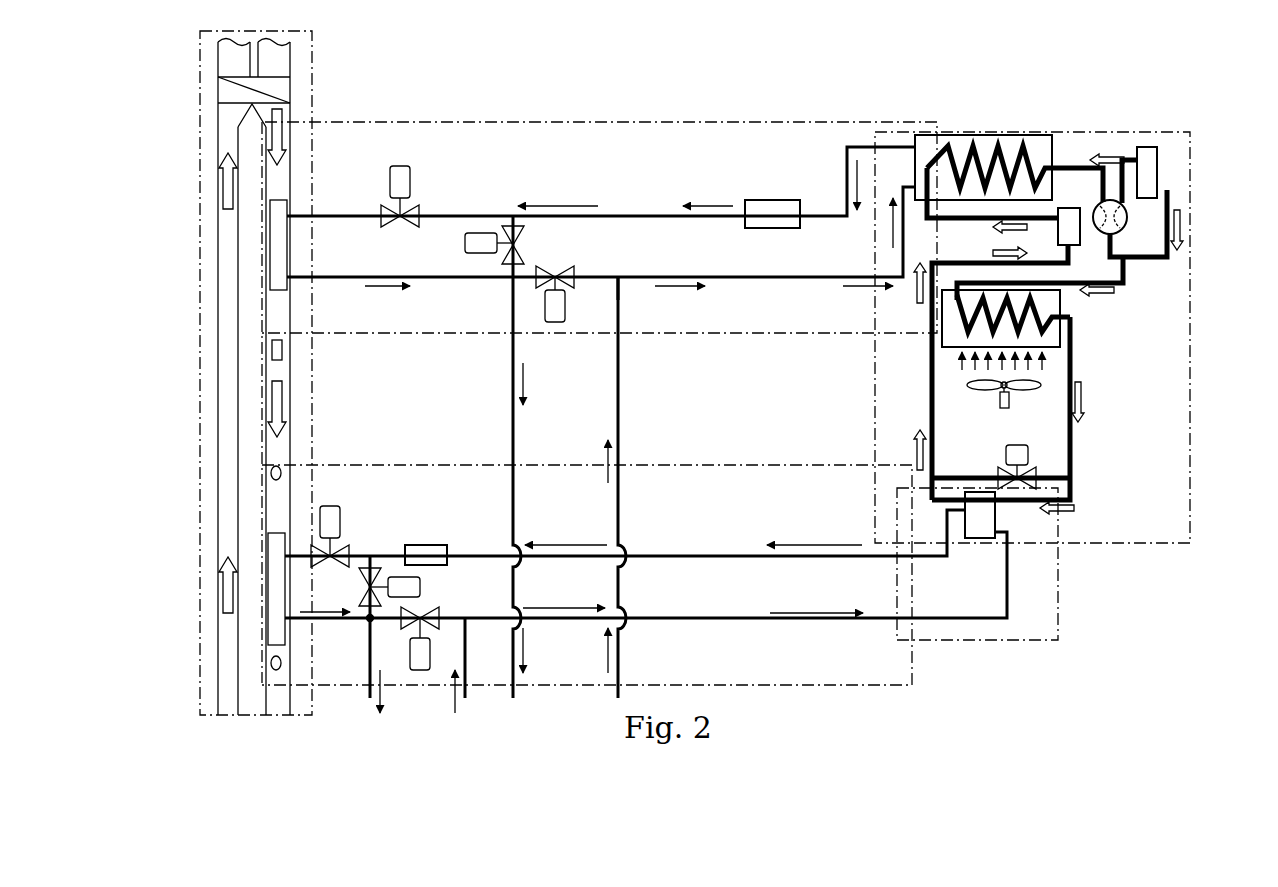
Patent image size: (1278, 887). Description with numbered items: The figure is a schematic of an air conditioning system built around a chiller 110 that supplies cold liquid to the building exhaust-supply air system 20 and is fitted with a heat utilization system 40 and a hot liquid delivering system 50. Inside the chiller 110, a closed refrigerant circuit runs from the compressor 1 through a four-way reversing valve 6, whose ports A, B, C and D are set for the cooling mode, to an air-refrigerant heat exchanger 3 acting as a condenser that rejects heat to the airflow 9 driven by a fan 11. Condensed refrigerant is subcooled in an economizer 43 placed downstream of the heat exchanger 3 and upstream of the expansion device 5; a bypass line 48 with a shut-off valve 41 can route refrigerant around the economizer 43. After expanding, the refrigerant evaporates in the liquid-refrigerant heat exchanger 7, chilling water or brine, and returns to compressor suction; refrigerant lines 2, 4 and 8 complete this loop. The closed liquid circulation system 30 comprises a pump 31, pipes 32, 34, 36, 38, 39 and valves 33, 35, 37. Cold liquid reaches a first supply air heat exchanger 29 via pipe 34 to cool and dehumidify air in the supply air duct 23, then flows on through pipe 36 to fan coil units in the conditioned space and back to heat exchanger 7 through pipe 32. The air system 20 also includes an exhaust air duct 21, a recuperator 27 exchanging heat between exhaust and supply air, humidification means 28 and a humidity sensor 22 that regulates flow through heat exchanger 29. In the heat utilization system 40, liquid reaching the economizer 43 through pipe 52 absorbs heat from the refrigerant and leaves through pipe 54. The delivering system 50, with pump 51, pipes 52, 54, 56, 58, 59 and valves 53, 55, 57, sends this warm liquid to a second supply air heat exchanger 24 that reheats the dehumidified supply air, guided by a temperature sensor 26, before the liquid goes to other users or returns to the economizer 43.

The compressor 1 is at (1150, 172).
The refrigerant pipe 2 is at (1148, 262).
The air-refrigerant heat exchanger 3 is at (1043, 295).
The refrigerant pipe 4 is at (1073, 358).
The expansion device 5 is at (1067, 235).
The 4-way reversing valve 6 is at (1123, 218).
The liquid-refrigerant heat exchanger 7 is at (967, 197).
The refrigerant pipe 8 is at (952, 262).
The airflow 9 is at (1023, 352).
The fan 11 is at (982, 388).
The building exhaust-supply air system 20 is at (198, 138).
The exhaust air duct 21 is at (230, 383).
The humidity sensor 22 is at (270, 557).
The supply air duct 23 is at (273, 183).
The second supply air heat exchanger 24 is at (270, 473).
The temperature sensor 26 is at (270, 662).
The recuperator 27 is at (278, 92).
The humidification means 28 is at (272, 350).
The first supply air heat exchanger 29 is at (277, 280).
The closed liquid circulation system 30 is at (598, 120).
The pump 31 is at (765, 215).
The pipes 32 is at (900, 250).
The valve 33 is at (413, 215).
The pipes 34 is at (846, 182).
The valve 35 is at (503, 215).
The pipe 36 is at (477, 279).
The valve 37 is at (568, 270).
The pipe 38 is at (518, 268).
The pipe 39 is at (600, 276).
The heat utilization system 40 is at (1062, 612).
The shut-off valve 41 is at (1003, 487).
The economizer 43 is at (983, 515).
The bypass line 48 is at (972, 474).
The hot liquid delivering system 50 is at (915, 650).
The pump 51 is at (430, 547).
The pipe 52 is at (1005, 557).
The valve 53 is at (340, 545).
The pipe 54 is at (733, 553).
The valve 55 is at (375, 570).
The pipe 56 is at (358, 628).
The valve 57 is at (372, 645).
The pipe 58 is at (430, 615).
The pipe 59 is at (470, 630).
The chiller 110 is at (1195, 320).